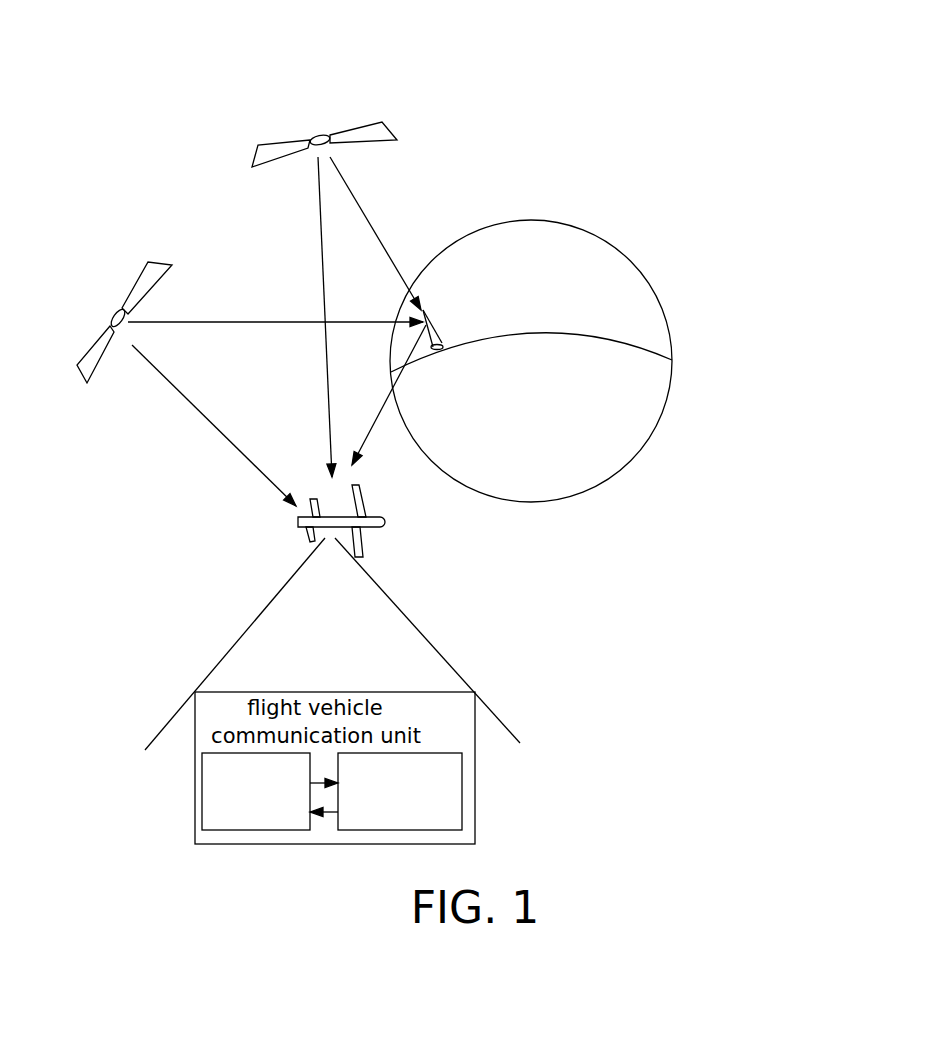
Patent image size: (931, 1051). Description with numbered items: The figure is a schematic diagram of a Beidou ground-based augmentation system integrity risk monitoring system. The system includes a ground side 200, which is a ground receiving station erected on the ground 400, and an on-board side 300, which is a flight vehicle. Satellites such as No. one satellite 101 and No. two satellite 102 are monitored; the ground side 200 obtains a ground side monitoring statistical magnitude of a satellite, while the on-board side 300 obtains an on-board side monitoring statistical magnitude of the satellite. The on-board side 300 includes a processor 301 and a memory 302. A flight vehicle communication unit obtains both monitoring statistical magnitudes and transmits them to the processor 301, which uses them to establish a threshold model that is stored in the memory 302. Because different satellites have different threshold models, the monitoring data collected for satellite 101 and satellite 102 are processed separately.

The No. 1 satellite 101 is at (100, 308).
The No. 2 satellite 102 is at (317, 118).
The ground side 200 is at (443, 333).
The on-board side 300 is at (390, 538).
The processor 301 is at (400, 791).
The memory 302 is at (256, 791).
The ground 400 is at (662, 302).